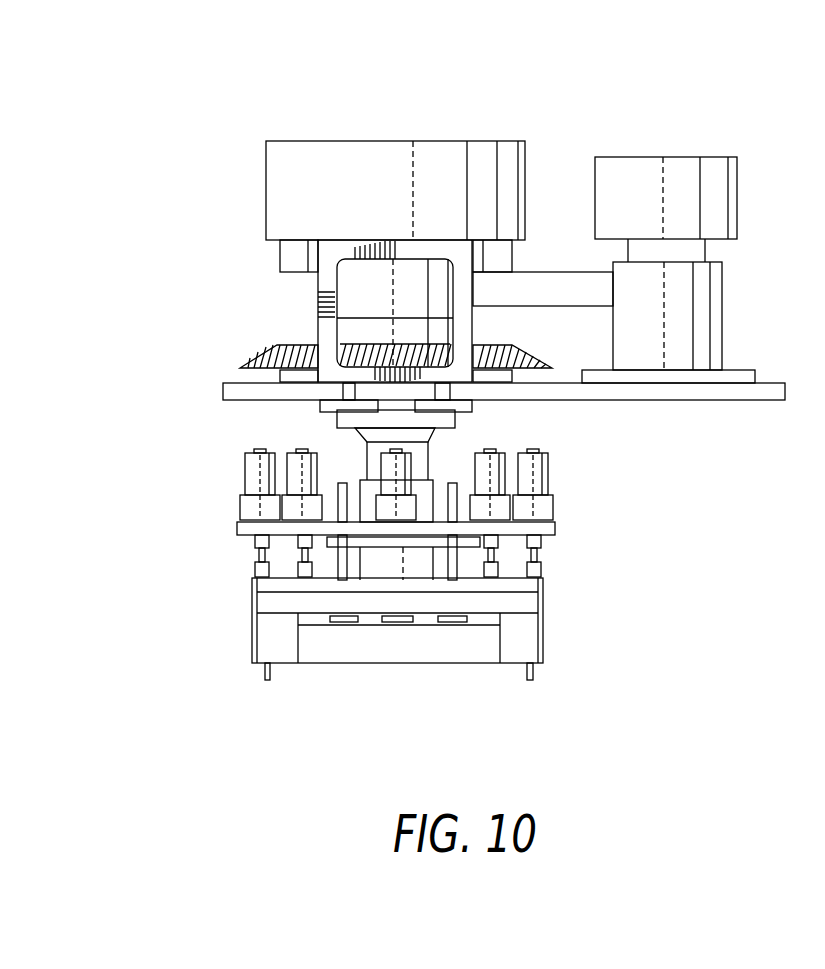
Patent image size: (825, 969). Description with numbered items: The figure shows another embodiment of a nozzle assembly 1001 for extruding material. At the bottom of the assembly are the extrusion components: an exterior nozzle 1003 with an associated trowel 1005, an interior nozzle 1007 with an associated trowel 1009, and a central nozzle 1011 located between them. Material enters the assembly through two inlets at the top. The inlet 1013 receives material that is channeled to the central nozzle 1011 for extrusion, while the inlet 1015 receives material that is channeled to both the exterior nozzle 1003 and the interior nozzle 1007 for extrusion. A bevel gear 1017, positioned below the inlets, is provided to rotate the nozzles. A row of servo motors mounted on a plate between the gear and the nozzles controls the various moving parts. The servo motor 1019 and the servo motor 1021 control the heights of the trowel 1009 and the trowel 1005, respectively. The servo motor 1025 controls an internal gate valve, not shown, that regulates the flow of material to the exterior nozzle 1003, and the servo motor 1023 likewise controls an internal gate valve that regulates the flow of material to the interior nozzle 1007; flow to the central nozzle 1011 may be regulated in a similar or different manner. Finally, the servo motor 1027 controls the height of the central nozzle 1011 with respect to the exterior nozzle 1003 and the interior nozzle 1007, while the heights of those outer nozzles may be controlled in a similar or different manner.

The nozzle assembly 1001 is at (650, 543).
The exterior nozzle 1003 is at (280, 647).
The trowel 1005 is at (265, 671).
The interior nozzle 1007 is at (523, 643).
The trowel 1009 is at (535, 670).
The central nozzle 1011 is at (397, 665).
The inlet 1013 is at (395, 141).
The inlet 1015 is at (672, 157).
The bevel gear 1017 is at (272, 342).
The servo motor 1019 is at (553, 472).
The servo motor 1021 is at (245, 482).
The servo motor 1023 is at (520, 452).
The servo motor 1025 is at (303, 452).
The servo motor 1027 is at (412, 462).